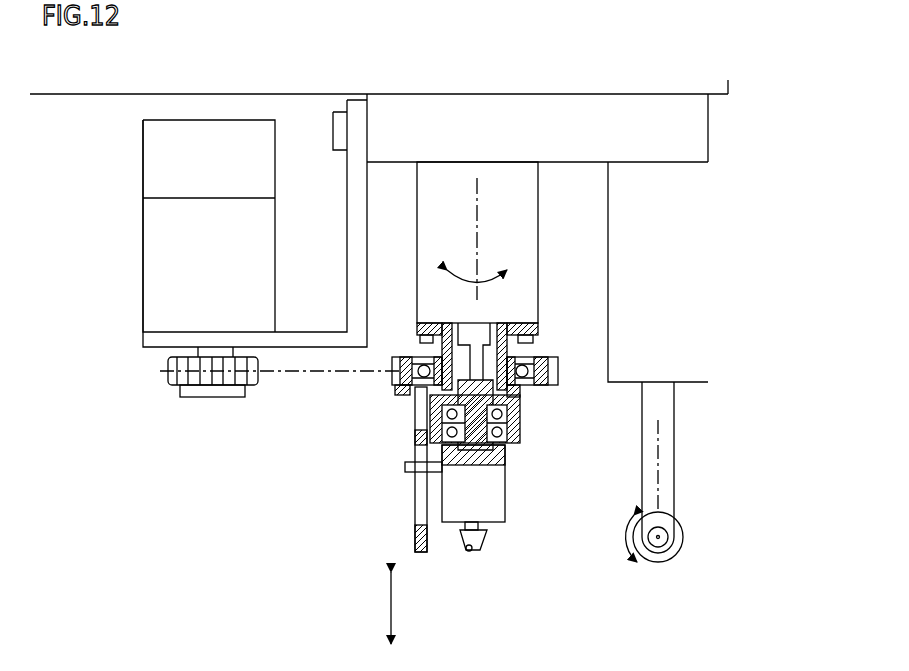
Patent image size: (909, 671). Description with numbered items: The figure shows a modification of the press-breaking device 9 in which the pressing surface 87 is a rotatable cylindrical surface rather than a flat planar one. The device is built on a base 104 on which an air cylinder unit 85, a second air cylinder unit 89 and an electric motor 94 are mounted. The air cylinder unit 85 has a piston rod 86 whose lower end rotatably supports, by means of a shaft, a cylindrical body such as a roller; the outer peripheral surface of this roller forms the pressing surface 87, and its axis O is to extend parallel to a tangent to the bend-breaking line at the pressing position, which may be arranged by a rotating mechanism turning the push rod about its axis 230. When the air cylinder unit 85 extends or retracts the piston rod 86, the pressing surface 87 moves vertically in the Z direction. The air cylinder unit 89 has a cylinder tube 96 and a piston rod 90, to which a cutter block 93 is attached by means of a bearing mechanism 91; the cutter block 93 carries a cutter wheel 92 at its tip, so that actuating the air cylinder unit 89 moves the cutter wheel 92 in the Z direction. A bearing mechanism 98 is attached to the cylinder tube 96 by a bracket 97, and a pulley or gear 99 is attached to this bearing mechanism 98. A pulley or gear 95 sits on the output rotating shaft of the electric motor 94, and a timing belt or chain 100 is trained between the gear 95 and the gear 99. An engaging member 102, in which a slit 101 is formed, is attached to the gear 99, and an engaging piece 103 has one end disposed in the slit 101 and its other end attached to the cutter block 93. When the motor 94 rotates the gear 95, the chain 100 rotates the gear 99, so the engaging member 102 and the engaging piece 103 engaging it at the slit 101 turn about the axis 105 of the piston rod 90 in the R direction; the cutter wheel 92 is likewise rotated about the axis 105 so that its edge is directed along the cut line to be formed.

The press-breaking device 9 is at (250, 485).
The air cylinder unit 85 is at (708, 218).
The piston rod 86 is at (675, 410).
The pressing surface 87 is at (660, 560).
The air cylinder unit 89 is at (527, 202).
The piston rod 90 is at (520, 345).
The bearing mechanism 91 is at (510, 460).
The cutter wheel 92 is at (470, 552).
The cutter block 93 is at (500, 510).
The electric motor 94 is at (160, 178).
The pulley or gear 95 is at (175, 390).
The cylinder tube 96 is at (527, 282).
The bracket 97 is at (520, 388).
The bearing mechanism 98 is at (428, 352).
The pulley or gear 99 is at (560, 375).
The timing belt or chain 100 is at (312, 378).
The slit 101 is at (415, 520).
The engaging member 102 is at (415, 428).
The engaging piece 103 is at (400, 470).
The base 104 is at (708, 122).
The axis 105 is at (480, 258).
The axis 230 is at (660, 453).
The R direction R is at (447, 282).
The Z direction Z is at (390, 612).
The axis O is at (660, 537).